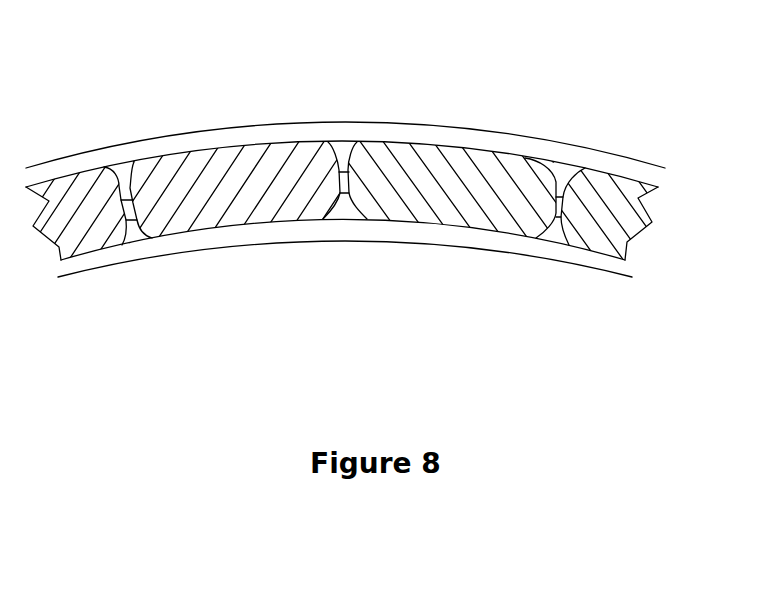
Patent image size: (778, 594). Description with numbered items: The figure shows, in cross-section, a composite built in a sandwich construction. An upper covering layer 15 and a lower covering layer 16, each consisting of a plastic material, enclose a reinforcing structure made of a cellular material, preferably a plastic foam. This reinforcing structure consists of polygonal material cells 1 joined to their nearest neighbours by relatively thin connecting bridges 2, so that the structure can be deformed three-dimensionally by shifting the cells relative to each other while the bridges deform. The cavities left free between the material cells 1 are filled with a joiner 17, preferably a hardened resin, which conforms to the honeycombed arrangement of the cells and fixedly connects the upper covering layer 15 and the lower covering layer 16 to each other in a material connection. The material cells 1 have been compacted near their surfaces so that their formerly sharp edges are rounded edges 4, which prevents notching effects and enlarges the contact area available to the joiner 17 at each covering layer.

The material cell 1 is at (190, 178).
The connecting bridge 2 is at (338, 172).
The rounded edge 4 is at (574, 170).
The upper covering layer 15 is at (423, 138).
The lower covering layer 16 is at (353, 227).
The joiner 17 is at (343, 162).